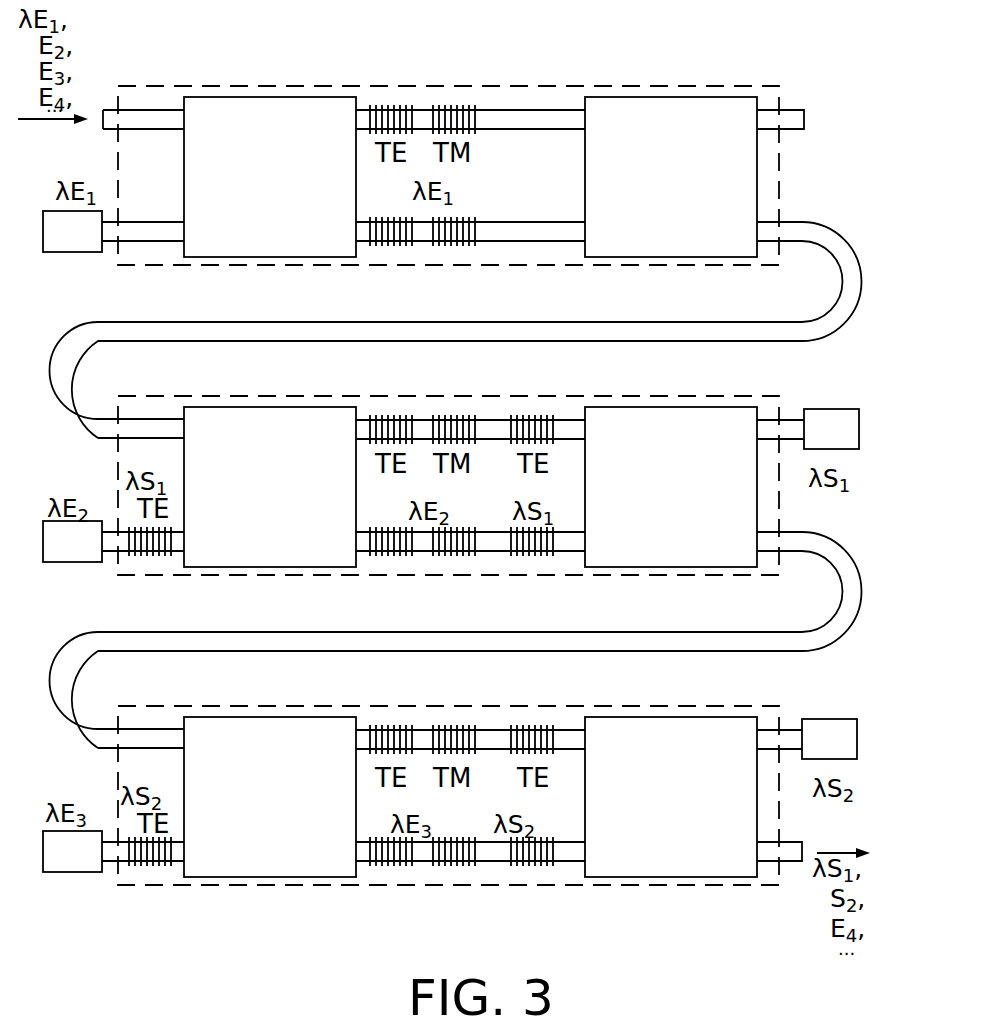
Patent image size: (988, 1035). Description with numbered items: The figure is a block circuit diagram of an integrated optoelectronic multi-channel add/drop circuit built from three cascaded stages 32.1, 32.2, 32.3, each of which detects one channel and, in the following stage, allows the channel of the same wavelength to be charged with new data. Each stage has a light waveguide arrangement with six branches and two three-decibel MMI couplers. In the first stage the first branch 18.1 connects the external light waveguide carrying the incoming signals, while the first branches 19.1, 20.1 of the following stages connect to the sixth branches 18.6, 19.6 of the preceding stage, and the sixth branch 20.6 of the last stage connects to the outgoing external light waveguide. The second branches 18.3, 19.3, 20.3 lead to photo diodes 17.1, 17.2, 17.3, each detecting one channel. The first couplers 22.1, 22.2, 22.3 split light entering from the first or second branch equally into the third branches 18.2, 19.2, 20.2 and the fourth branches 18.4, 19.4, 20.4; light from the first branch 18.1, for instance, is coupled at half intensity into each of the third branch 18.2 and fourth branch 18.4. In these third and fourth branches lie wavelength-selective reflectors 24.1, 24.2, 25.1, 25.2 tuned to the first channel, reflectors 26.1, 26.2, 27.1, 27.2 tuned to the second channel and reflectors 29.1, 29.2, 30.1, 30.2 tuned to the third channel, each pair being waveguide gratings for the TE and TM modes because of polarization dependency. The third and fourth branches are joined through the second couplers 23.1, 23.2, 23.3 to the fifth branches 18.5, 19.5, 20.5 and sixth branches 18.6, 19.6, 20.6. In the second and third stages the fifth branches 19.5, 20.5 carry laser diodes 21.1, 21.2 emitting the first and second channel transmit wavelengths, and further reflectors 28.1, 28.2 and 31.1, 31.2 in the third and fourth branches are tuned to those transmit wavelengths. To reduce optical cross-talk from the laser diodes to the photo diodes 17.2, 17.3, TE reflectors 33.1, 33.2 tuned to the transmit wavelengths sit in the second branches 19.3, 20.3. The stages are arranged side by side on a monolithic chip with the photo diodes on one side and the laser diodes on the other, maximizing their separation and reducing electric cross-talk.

The photo diode 17.1 is at (63, 252).
The photo diode 17.2 is at (78, 562).
The photo diode 17.3 is at (82, 872).
The first branch 18.1 is at (153, 109).
The third branch 18.2 is at (543, 109).
The second branch 18.3 is at (148, 241).
The fourth branch 18.4 is at (515, 241).
The fifth branch 18.5 is at (793, 109).
The sixth branch 18.6 is at (803, 243).
The first branch 19.1 is at (140, 418).
The third branch 19.2 is at (572, 419).
The second branch 19.3 is at (180, 530).
The fourth branch 19.4 is at (565, 551).
The fifth branch 19.5 is at (797, 419).
The sixth branch 19.6 is at (805, 552).
The first branch 20.1 is at (142, 728).
The third branch 20.2 is at (572, 729).
The second branch 20.3 is at (180, 840).
The fourth branch 20.4 is at (567, 861).
The fifth branch 20.5 is at (793, 729).
The sixth branch 20.6 is at (800, 862).
The laser diode 21.1 is at (835, 409).
The laser diode 21.2 is at (833, 719).
The first 3 dB MMI coupler 22.1 is at (262, 257).
The first 3 dB MMI coupler 22.2 is at (257, 567).
The first 3 dB MMI coupler 22.3 is at (257, 877).
The second 3 dB MMI coupler 23.1 is at (668, 257).
The second 3 dB MMI coupler 23.2 is at (683, 567).
The second 3 dB MMI coupler 23.3 is at (682, 877).
The wavelength-selective reflector 24.1 is at (390, 107).
The wavelength-selective reflector 24.2 is at (462, 107).
The wavelength-selective reflector 25.1 is at (392, 233).
The wavelength-selective reflector 25.2 is at (458, 233).
The wavelength-selective reflector 26.1 is at (392, 417).
The wavelength-selective reflector 26.2 is at (458, 417).
The wavelength-selective reflector 27.1 is at (390, 543).
The wavelength-selective reflector 27.2 is at (448, 543).
The further wavelength-selective reflector 28.1 is at (533, 417).
The further wavelength-selective reflector 28.2 is at (530, 543).
The wavelength-selective reflector 29.1 is at (390, 728).
The wavelength-selective reflector 29.2 is at (455, 728).
The wavelength-selective reflector 30.1 is at (383, 853).
The wavelength-selective reflector 30.2 is at (450, 853).
The further wavelength-selective reflector 31.1 is at (530, 728).
The further wavelength-selective reflector 31.2 is at (527, 853).
The stage 32.1 is at (612, 316).
The stage 32.2 is at (650, 626).
The stage 32.3 is at (597, 887).
The wavelength-selective reflector 33.1 is at (148, 556).
The wavelength-selective reflector 33.2 is at (147, 866).